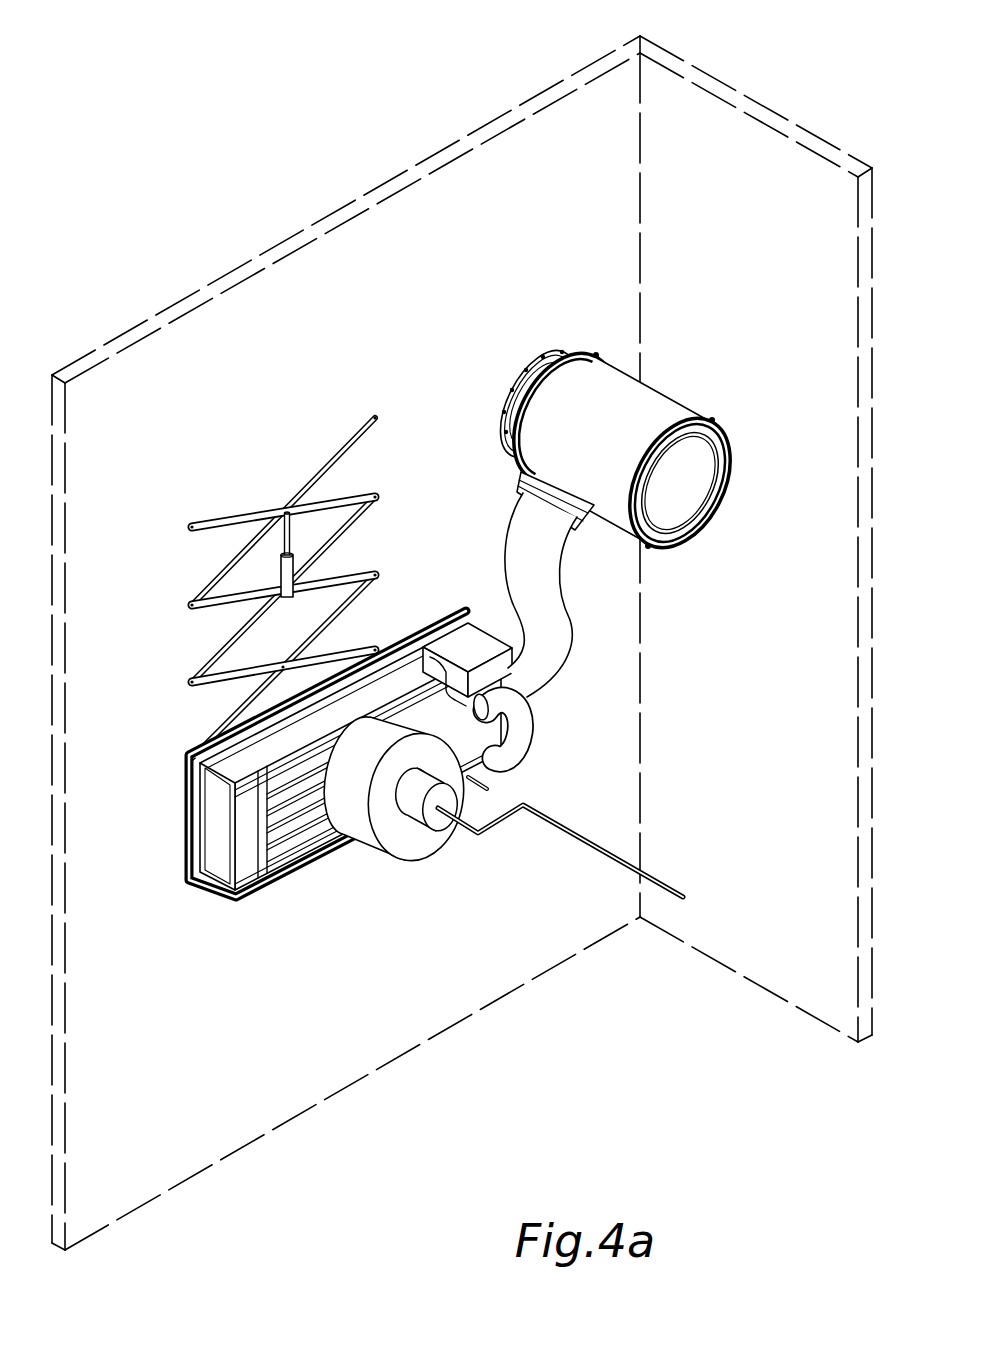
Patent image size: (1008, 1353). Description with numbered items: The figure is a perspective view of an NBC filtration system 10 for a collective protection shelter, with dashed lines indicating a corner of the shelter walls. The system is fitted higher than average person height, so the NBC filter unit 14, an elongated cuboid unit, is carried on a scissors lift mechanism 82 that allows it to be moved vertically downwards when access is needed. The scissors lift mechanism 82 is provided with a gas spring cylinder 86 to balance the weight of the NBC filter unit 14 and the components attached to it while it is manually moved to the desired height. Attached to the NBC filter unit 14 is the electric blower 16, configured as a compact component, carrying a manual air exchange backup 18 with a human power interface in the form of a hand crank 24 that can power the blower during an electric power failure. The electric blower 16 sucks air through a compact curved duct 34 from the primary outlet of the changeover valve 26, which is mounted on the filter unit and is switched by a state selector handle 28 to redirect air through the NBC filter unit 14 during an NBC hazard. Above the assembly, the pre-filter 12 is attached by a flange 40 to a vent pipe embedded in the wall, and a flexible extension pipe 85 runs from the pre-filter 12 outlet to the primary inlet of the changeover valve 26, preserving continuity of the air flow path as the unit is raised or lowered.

The NBC filtration system 10 is at (690, 320).
The pre-filter 12 is at (672, 408).
The NBC filter unit 14 is at (212, 820).
The electric blower 16 is at (358, 830).
The manual air exchange backup 18 is at (437, 822).
The hand crank 24 is at (548, 813).
The changeover valve 26 is at (466, 640).
The state selector handle 28 is at (489, 787).
The compact curved duct 34 is at (520, 728).
The flange 40 is at (533, 368).
The scissors lift mechanism 82 is at (212, 592).
The flexible extension pipe 85 is at (573, 640).
The gas spring cylinder 86 is at (286, 522).